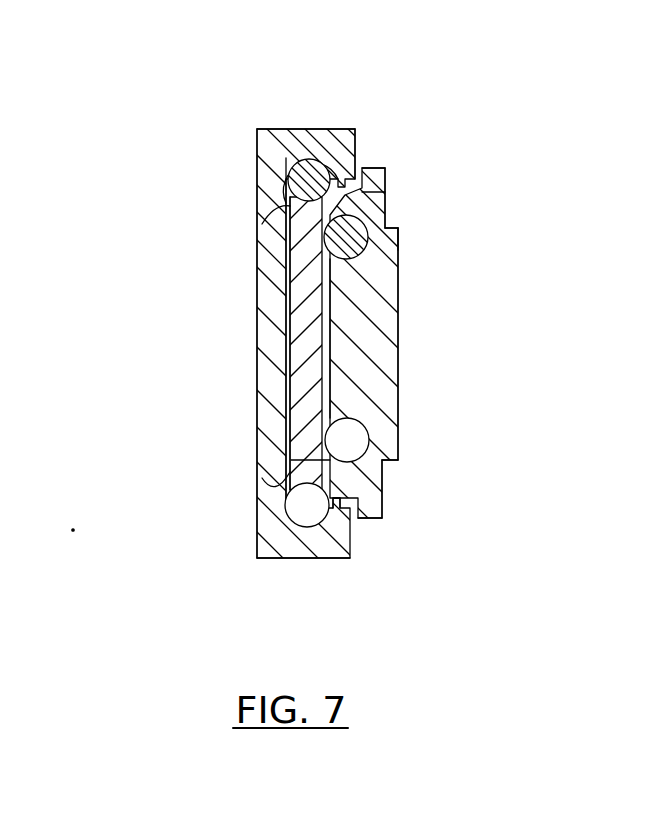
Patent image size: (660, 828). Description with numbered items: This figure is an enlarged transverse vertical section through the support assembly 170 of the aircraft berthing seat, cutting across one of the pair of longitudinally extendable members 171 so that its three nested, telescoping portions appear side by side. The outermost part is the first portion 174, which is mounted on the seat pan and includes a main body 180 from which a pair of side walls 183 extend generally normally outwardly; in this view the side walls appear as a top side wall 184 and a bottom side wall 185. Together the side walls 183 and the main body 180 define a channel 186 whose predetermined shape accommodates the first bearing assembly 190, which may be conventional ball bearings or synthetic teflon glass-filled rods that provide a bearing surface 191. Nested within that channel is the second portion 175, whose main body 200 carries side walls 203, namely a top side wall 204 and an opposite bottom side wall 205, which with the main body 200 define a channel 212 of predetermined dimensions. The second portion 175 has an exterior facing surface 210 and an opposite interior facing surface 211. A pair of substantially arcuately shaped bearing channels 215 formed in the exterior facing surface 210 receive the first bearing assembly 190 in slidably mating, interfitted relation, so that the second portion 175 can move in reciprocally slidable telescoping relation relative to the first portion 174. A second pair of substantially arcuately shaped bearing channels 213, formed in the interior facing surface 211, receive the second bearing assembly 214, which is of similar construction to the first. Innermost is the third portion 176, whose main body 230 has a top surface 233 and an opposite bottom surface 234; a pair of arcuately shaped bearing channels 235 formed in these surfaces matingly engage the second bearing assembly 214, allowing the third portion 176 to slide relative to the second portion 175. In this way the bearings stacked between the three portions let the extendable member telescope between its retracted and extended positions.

The support assembly 170 is at (330, 413).
The longitudinally extendable members 171 is at (343, 130).
The first portion 174 is at (279, 128).
The second portion 175 is at (395, 497).
The third portion 176 is at (373, 370).
The main body 180 is at (268, 262).
The side walls 183 is at (335, 123).
The top side wall 184 is at (300, 128).
The bottom side wall 185 is at (292, 543).
The channel 186 is at (387, 173).
The first bearing assembly 190 is at (330, 168).
The bearing surface 191 is at (385, 192).
The main body 200 is at (330, 350).
The side walls 203 is at (392, 208).
The top side wall 204 is at (362, 170).
The bottom side wall 205 is at (358, 504).
The exterior facing surface 210 is at (298, 200).
The interior facing surface 211 is at (400, 228).
The channel 212 is at (302, 290).
The bearing channels 213 is at (288, 280).
The second bearing assembly 214 is at (338, 258).
The bearing channels 215 is at (290, 233).
The main body 230 is at (368, 357).
The top surface 233 is at (400, 232).
The bottom surface 234 is at (396, 468).
The bearing channels 235 is at (363, 340).